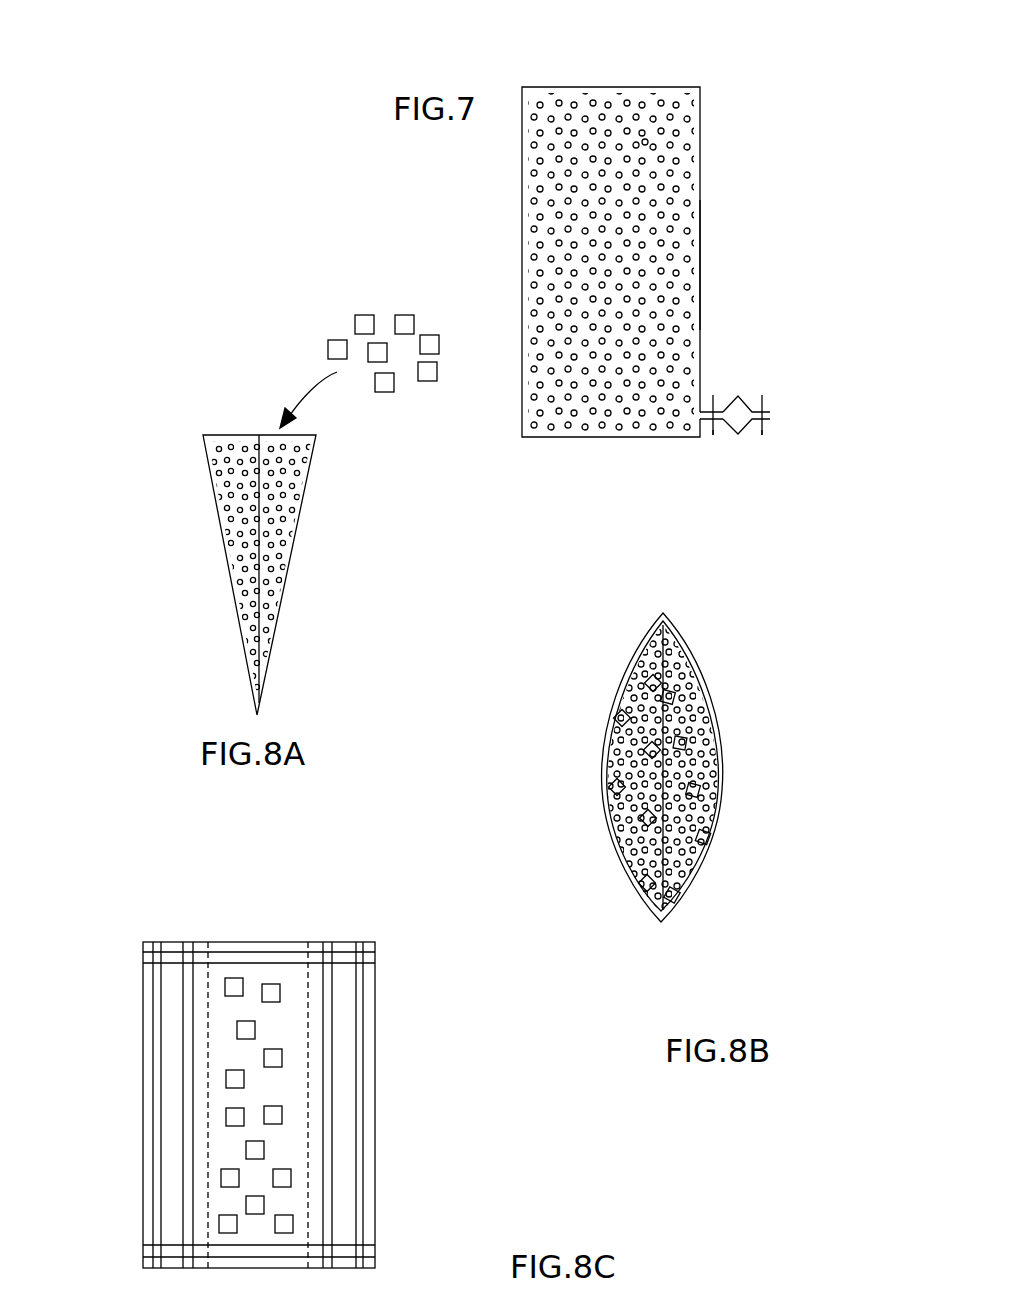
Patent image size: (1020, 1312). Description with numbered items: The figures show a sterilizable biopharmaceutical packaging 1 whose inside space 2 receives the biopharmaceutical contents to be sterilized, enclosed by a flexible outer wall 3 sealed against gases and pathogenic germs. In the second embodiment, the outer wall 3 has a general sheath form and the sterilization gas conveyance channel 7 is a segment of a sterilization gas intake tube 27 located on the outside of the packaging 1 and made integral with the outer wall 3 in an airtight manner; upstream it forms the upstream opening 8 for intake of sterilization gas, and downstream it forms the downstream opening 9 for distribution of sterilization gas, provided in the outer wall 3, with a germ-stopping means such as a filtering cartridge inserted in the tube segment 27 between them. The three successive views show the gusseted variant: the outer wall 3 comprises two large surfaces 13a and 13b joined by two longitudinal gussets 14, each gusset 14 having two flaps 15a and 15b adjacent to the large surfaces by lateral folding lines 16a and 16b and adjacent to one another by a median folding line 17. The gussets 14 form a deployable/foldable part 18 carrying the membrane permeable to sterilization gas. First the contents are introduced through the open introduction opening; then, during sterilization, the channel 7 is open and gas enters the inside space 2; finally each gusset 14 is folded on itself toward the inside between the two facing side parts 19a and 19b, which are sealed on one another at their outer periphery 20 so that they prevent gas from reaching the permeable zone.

In FIG. 7, the sterilizable biopharmaceutical packaging 1 is at (712, 150).
In FIG. 8A, the sterilizable biopharmaceutical packaging 1 is at (308, 571).
In FIG. 8B, the sterilizable biopharmaceutical packaging 1 is at (740, 727).
In FIG. 8C, the sterilizable biopharmaceutical packaging 1 is at (397, 1048).
In FIG. 7, the inside space 2 is at (645, 142).
In FIG. 8A, the inside space 2 is at (233, 540).
In FIG. 8B, the inside space 2 is at (713, 781).
In FIG. 8C, the inside space 2 is at (256, 1105).
In FIG. 7, the outer wall 3 is at (700, 190).
In FIG. 8A, the outer wall 3 is at (308, 473).
In FIG. 8B, the outer wall 3 is at (722, 817).
In FIG. 8C, the outer wall 3 is at (345, 1108).
In FIG. 7, the sterilization gas conveyance channel 7 is at (752, 392).
In FIG. 7, the upstream opening for intake of sterilization gas 8 is at (767, 416).
In FIG. 7, the downstream opening for distribution of sterilization gas 9 is at (697, 416).
In FIG. 8A, the first large surface 13a is at (243, 610).
In FIG. 8B, the first large surface 13a is at (600, 781).
In FIG. 8C, the first large surface 13a is at (172, 1053).
In FIG. 8A, the second large surface 13b is at (275, 632).
In FIG. 8B, the second large surface 13b is at (710, 848).
In FIG. 8A, the longitudinal gusset 14 is at (232, 482).
In FIG. 8B, the longitudinal gusset 14 is at (670, 648).
In FIG. 8C, the longitudinal gusset 14 is at (165, 1150).
In FIG. 8A, the first flap 15a is at (218, 452).
In FIG. 8A, the second flap 15b is at (293, 455).
In FIG. 8A, the first lateral folding line 16a is at (229, 579).
In FIG. 8A, the second lateral folding line 16b is at (285, 588).
In FIG. 8A, the median folding line 17 is at (250, 507).
In FIG. 8A, the deployable/foldable part 18 is at (272, 593).
In FIG. 8A, the first facing side part 19a is at (210, 473).
In FIG. 8B, the first facing side part 19a is at (642, 645).
In FIG. 8C, the first facing side part 19a is at (172, 1003).
In FIG. 8A, the second facing side part 19b is at (298, 522).
In FIG. 8B, the second facing side part 19b is at (692, 655).
In FIG. 8C, the outer periphery 20 is at (343, 962).
In FIG. 7, the segment of a sterilization gas intake tube 27 is at (765, 408).